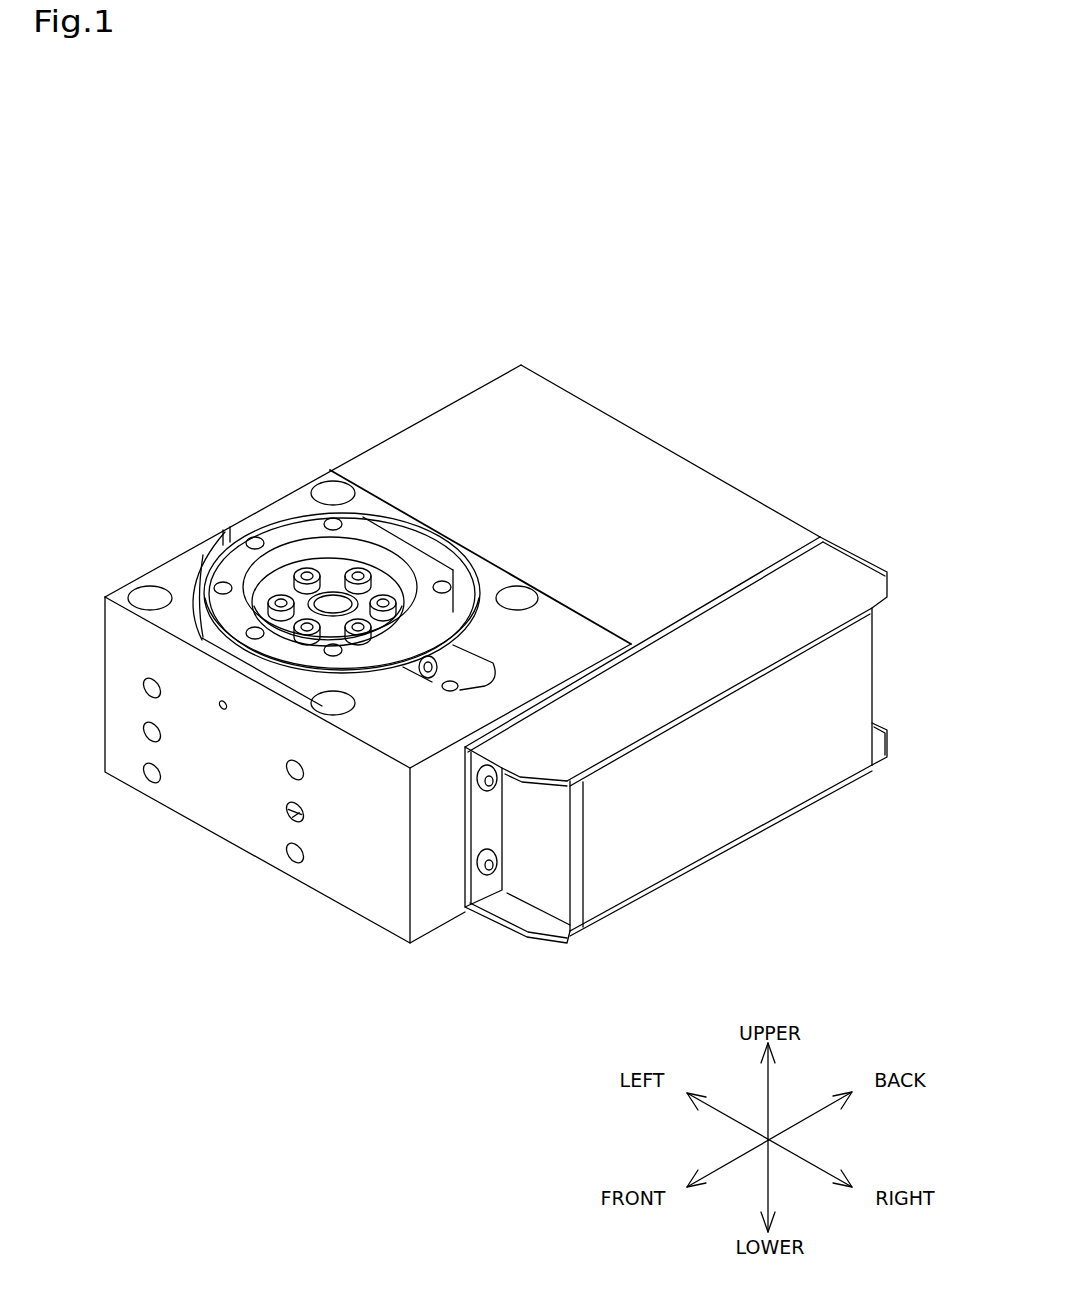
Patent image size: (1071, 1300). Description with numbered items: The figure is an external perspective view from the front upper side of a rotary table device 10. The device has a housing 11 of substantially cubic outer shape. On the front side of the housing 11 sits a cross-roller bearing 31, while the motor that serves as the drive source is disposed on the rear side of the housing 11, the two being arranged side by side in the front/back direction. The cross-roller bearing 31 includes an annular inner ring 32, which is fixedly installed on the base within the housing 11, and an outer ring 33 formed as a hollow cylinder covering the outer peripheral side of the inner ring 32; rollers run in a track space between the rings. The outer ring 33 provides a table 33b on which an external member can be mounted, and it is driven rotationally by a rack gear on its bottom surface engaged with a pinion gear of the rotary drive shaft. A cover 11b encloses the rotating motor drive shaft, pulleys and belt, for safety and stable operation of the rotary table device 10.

The rotary table device 10 is at (710, 277).
The housing 11 is at (360, 873).
The cover 11b is at (730, 792).
The cross-roller bearing 31 is at (265, 537).
The inner ring 32 is at (258, 577).
The outer ring 33 is at (397, 537).
The table 33b is at (427, 496).